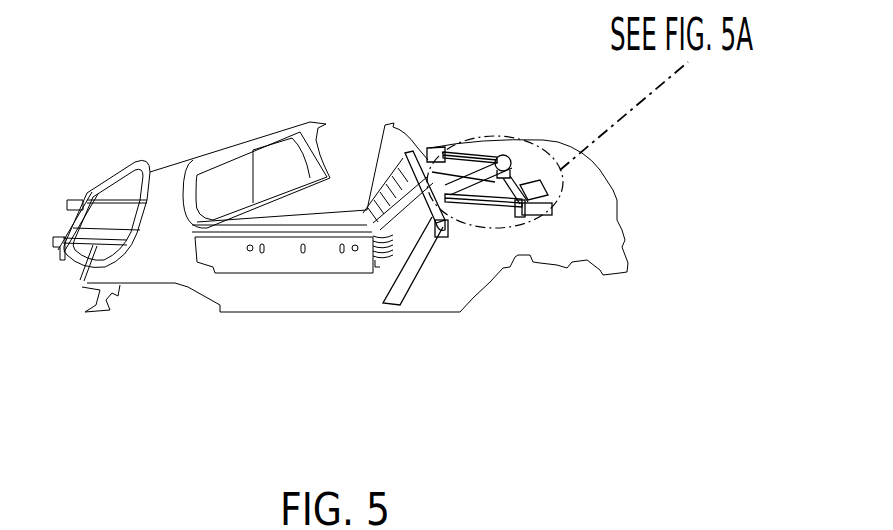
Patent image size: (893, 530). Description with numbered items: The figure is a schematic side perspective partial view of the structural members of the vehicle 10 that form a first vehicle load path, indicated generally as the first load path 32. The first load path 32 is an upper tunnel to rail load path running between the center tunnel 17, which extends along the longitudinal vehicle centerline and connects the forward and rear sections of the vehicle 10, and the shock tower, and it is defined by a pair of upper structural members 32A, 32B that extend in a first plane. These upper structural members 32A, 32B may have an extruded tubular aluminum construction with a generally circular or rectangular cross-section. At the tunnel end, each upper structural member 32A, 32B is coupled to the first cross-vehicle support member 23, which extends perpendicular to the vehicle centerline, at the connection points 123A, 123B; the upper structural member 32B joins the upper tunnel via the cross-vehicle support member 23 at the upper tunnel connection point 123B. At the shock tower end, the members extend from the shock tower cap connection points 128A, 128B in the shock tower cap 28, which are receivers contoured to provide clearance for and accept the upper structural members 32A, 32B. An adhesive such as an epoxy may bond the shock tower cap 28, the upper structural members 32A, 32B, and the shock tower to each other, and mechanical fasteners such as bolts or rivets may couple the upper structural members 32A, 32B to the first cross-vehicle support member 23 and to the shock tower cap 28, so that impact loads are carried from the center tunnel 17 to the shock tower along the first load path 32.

The vehicle 10 is at (222, 102).
The center tunnel 17 is at (320, 233).
The first cross-vehicle support member 23 is at (430, 218).
The shock tower cap 28 is at (530, 150).
The first load path 32 is at (455, 112).
The upper structural member 32A is at (490, 207).
The upper structural member 32B is at (470, 150).
The connection point 123A is at (437, 227).
The upper tunnel connection point 123B is at (437, 148).
The shock tower cap connection point 128A is at (517, 210).
The shock tower cap connection point 128B is at (500, 150).